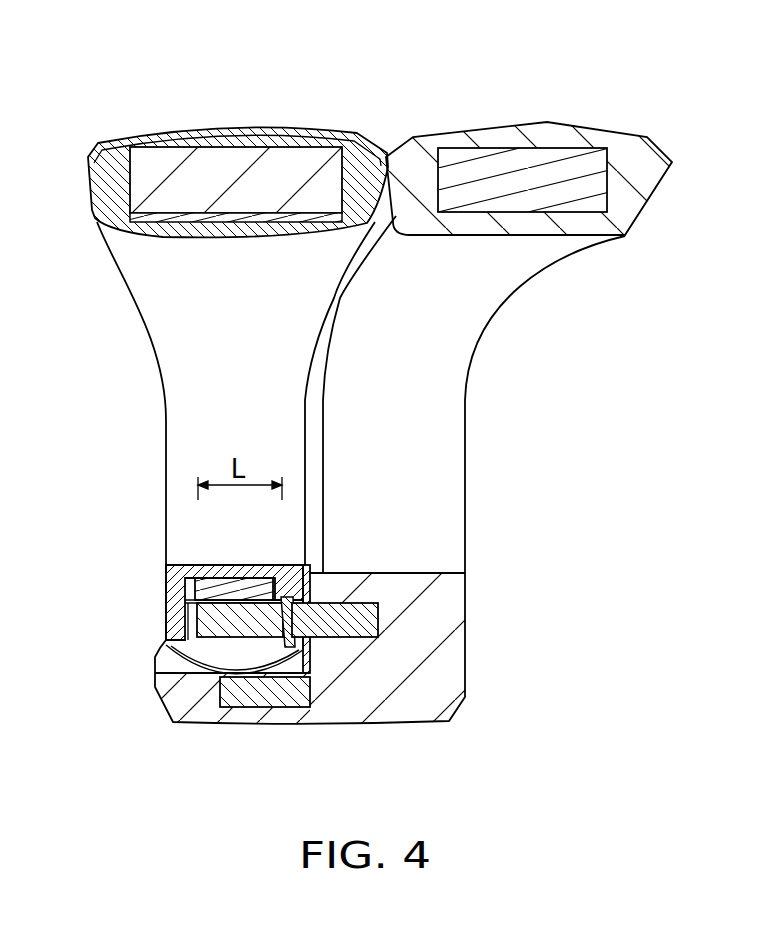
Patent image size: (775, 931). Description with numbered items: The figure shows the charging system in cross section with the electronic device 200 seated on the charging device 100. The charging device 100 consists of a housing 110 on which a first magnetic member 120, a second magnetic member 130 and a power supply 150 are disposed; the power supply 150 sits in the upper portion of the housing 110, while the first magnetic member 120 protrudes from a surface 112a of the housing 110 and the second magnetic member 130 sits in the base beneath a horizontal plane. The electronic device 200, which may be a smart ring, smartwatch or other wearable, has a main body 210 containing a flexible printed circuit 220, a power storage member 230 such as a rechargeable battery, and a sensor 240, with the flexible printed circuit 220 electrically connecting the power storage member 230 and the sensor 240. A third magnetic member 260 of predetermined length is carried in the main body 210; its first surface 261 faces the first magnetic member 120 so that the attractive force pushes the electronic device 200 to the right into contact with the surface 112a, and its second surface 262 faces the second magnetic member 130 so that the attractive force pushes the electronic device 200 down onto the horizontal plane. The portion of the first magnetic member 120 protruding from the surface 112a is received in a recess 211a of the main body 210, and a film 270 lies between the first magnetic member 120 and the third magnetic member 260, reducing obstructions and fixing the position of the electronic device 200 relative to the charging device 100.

The charging device 100 is at (415, 388).
The housing 110 is at (637, 164).
The surface 112a is at (300, 583).
The first magnetic member 120 is at (340, 617).
The second magnetic member 130 is at (243, 690).
The power supply 150 is at (530, 185).
The electronic device 200 is at (209, 335).
The main body 210 is at (108, 190).
The recess 211a is at (311, 634).
The flexible printed circuit 220 is at (214, 220).
The power storage member 230 is at (303, 185).
The sensor 240 is at (192, 578).
The third magnetic member 260 is at (222, 620).
The first surface 261 is at (291, 596).
The second surface 262 is at (208, 646).
The film 270 is at (293, 660).